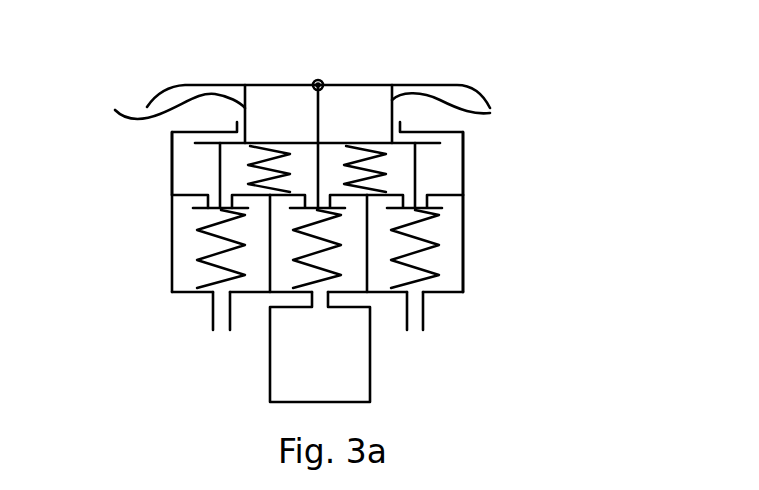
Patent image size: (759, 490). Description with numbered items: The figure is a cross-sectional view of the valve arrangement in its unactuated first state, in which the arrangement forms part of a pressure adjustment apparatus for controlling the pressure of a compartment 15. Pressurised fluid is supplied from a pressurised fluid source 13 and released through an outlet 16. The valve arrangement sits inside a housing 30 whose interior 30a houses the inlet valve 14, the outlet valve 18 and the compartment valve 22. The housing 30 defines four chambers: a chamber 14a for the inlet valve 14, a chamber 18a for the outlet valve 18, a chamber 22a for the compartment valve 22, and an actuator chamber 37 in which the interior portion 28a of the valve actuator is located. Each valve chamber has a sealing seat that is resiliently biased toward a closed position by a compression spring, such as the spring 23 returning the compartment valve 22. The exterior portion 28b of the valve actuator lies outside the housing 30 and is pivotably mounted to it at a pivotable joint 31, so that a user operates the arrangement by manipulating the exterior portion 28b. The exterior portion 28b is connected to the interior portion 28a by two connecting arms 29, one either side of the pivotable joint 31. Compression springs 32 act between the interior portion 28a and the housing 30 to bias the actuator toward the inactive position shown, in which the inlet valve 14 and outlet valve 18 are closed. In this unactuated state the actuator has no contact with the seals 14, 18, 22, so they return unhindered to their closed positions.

The pressurised fluid source 13 is at (217, 337).
The inlet valve 14 is at (190, 196).
The inlet valve chamber 14a is at (188, 218).
The compartment 15 is at (320, 347).
The outlet 16 is at (423, 330).
The outlet valve 18 is at (445, 210).
The outlet valve chamber 18a is at (448, 252).
The compartment valve 22 is at (308, 208).
The compartment valve chamber 22a is at (335, 262).
The compression spring 23 is at (447, 276).
The interior portion 28a is at (402, 147).
The exterior portion 28b is at (373, 84).
The connecting arm 29 is at (537, 98).
The housing 30 is at (452, 143).
The interior 30a is at (200, 158).
The pivotable joint 31 is at (314, 80).
The compression spring 32 is at (275, 150).
The actuator chamber 37 is at (465, 158).